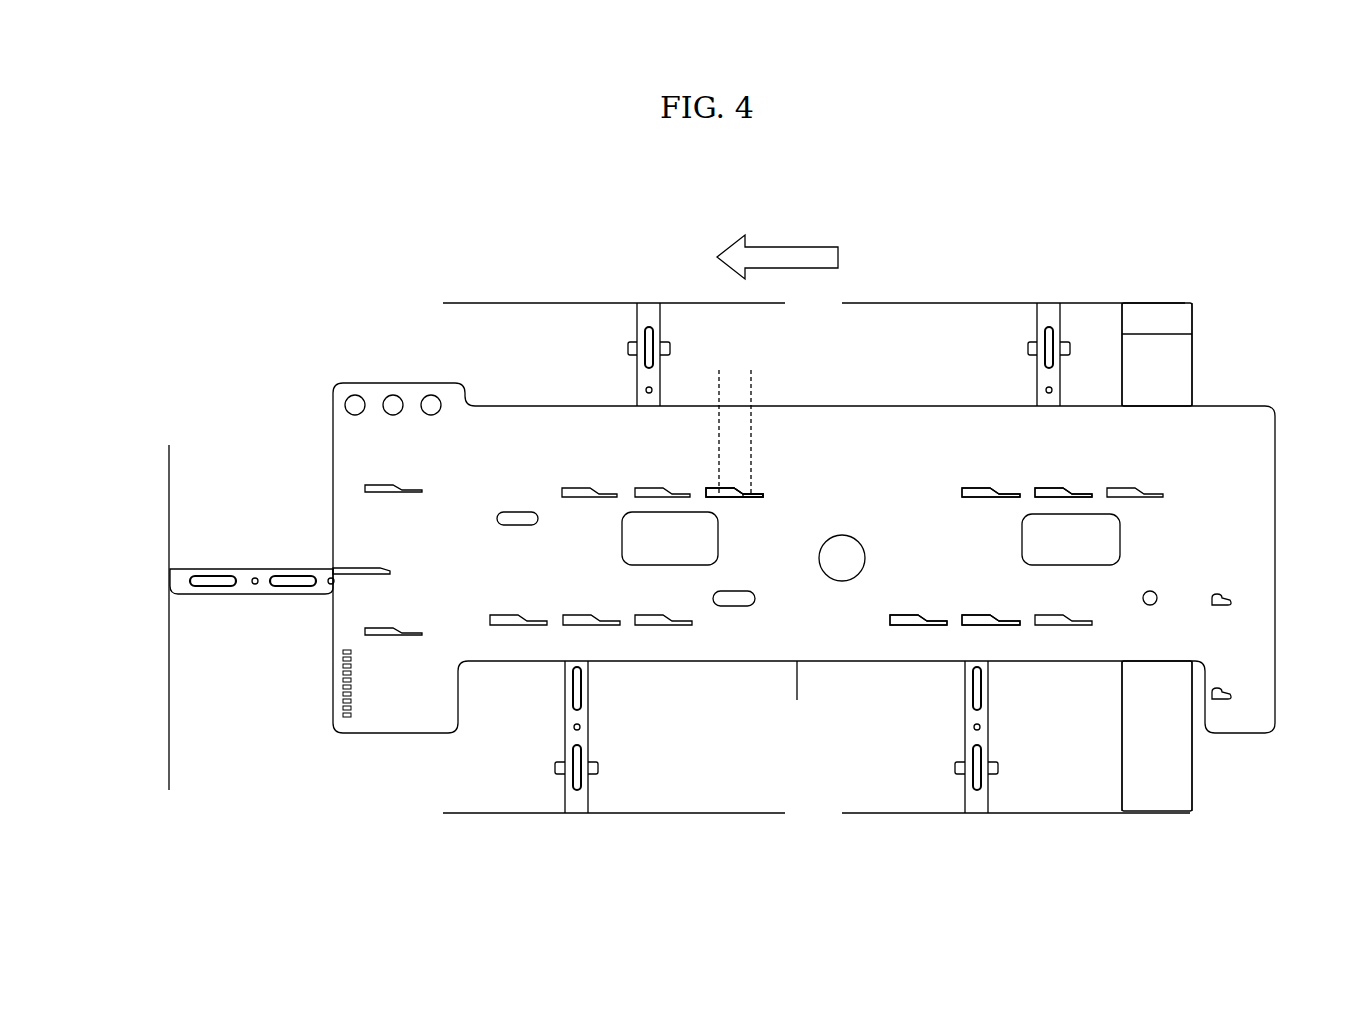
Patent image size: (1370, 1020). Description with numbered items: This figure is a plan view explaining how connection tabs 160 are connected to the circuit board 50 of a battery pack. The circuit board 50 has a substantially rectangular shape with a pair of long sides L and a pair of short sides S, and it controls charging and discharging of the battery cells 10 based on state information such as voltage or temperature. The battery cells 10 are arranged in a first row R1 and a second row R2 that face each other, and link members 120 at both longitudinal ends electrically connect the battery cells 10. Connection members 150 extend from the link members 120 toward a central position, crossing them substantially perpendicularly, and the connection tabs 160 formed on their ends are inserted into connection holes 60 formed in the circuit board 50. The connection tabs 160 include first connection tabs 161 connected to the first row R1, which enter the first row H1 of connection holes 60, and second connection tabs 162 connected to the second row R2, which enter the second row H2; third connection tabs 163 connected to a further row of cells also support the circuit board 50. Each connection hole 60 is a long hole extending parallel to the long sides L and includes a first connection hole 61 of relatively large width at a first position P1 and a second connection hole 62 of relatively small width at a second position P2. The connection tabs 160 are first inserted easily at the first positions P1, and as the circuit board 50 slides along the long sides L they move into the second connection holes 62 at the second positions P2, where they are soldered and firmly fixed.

The battery cell 10 is at (1188, 790).
The circuit board 50 is at (378, 386).
The connection hole 60 is at (794, 547).
The first connection hole 61 is at (725, 498).
The second connection hole 62 is at (752, 498).
The link member 120 is at (169, 657).
The connection member 150 is at (253, 567).
The connection tab 160 is at (648, 489).
The first connection tab 161 is at (970, 617).
The second connection tab 162 is at (1048, 489).
The third connection tab 163 is at (348, 570).
The first position P1 is at (716, 420).
The second position P2 is at (750, 420).
The long side L is at (796, 694).
The short side S is at (1278, 556).
The first row of connection holes H1 is at (1108, 622).
The second row of connection holes H2 is at (1178, 491).
The first row R1 is at (1225, 750).
The second row R2 is at (1213, 373).